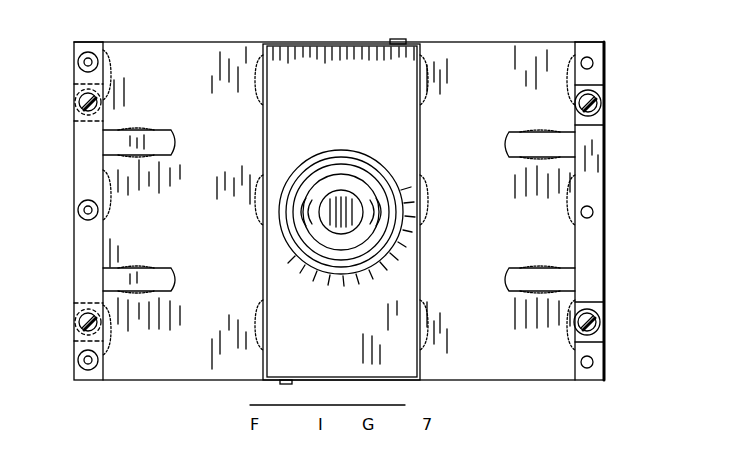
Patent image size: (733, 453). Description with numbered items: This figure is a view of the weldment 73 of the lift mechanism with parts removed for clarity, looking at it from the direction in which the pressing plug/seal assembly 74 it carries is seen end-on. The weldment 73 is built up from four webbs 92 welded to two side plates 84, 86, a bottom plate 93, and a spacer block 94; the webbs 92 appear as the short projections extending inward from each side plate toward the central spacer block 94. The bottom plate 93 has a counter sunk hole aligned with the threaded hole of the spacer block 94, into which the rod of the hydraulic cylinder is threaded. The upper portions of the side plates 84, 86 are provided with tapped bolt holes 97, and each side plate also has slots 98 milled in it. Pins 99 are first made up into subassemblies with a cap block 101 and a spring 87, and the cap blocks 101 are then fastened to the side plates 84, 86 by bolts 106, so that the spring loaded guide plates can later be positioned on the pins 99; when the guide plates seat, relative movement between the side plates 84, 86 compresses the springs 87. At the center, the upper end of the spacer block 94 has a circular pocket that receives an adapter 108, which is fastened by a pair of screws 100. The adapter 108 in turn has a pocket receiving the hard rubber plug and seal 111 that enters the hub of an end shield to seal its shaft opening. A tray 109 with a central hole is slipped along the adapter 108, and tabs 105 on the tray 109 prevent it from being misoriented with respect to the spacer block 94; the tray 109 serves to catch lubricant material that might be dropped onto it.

The weldment 73 is at (190, 39).
The pressing plug/seal assembly 74 is at (342, 206).
The side plate 84 is at (74, 174).
The side plate 86 is at (586, 44).
The spring 87 is at (78, 106).
The webb 92 is at (162, 134).
The bottom plate 93 is at (487, 356).
The spacer block 94 is at (262, 138).
The tapped bolt hole 97 is at (594, 63).
The slot 98 is at (78, 121).
The pin 99 is at (84, 92).
The screw 100 is at (387, 215).
The cap block 101 is at (92, 42).
The tab 105 is at (395, 39).
The bolt 106 is at (78, 62).
The adapter 108 is at (340, 276).
The tray 109 is at (320, 44).
The plug and seal 111 is at (336, 192).